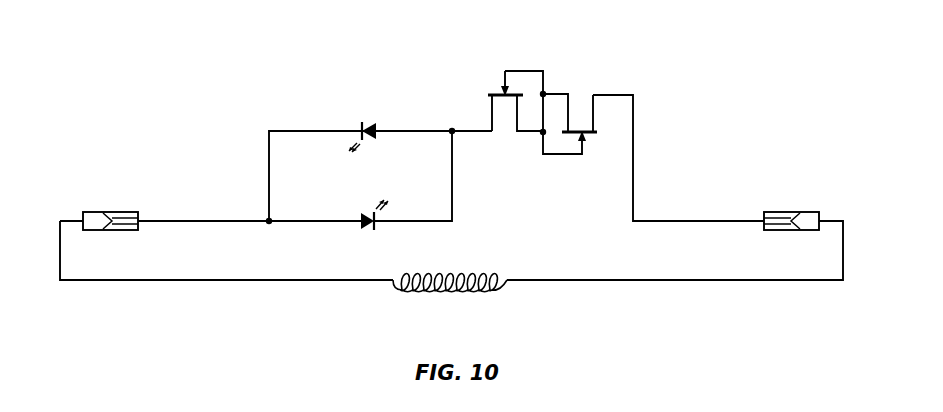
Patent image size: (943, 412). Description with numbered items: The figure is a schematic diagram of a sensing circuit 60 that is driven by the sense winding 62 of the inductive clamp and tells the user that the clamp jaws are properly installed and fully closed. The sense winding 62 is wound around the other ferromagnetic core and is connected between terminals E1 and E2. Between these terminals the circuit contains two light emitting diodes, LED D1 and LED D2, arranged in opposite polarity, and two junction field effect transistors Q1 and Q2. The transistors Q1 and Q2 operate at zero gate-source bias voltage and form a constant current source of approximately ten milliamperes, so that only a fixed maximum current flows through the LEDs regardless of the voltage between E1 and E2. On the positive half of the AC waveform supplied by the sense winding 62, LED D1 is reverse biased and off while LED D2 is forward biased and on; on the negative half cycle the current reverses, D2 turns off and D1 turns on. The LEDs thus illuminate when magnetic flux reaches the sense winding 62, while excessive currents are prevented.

The sensing circuit 60 is at (442, 42).
The sense winding 62 is at (490, 291).
The terminal E1 is at (110, 210).
The terminal E2 is at (791, 210).
The LED D1 is at (367, 127).
The LED D2 is at (373, 227).
The junction field effect transistor Q1 is at (523, 112).
The junction field effect transistor Q2 is at (585, 124).